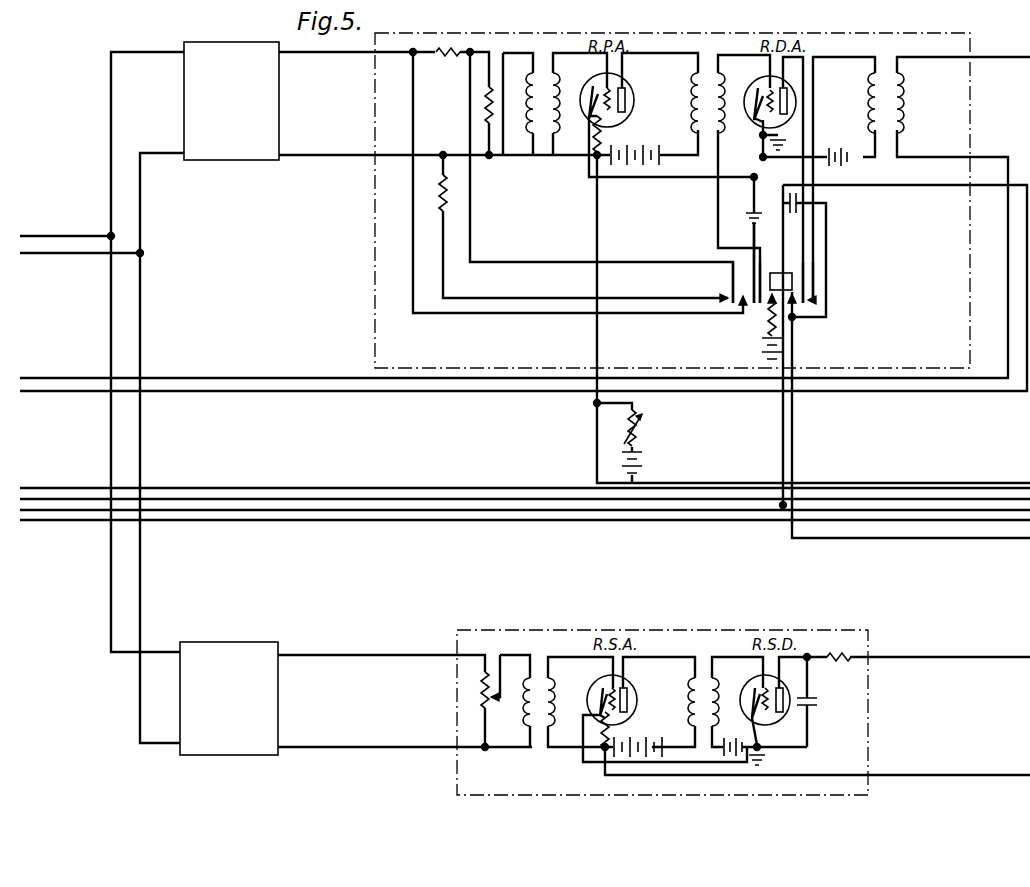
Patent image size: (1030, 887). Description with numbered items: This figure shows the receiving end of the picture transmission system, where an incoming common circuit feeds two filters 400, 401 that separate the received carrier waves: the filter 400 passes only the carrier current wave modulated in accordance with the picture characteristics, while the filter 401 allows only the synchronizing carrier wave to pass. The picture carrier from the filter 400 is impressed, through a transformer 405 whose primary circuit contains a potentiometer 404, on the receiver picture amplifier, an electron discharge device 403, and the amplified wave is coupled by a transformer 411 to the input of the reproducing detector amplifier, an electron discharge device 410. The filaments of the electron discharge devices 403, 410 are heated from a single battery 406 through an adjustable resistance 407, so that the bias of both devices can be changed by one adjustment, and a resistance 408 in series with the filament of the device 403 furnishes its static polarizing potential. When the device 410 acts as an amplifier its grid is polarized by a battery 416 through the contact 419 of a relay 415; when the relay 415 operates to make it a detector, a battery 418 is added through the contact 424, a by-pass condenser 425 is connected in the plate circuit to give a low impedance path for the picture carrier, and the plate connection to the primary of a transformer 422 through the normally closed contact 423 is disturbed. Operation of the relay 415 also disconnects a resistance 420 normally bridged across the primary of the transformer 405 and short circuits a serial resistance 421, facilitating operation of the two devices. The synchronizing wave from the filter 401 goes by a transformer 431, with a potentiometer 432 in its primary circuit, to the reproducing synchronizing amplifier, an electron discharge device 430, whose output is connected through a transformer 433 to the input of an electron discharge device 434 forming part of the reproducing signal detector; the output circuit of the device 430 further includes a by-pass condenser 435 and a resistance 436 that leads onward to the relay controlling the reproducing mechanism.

The filter 400 is at (275, 152).
The filter 401 is at (258, 752).
The electron discharge device 403 is at (598, 80).
The potentiometer 404 is at (489, 131).
The transformer 405 is at (546, 68).
The battery 406 is at (644, 454).
The adjustable resistance 407 is at (641, 425).
The resistance 408 is at (606, 140).
The electron discharge device 410 is at (762, 80).
The transformer 411 is at (713, 132).
The relay 415 is at (770, 280).
The battery 416 is at (752, 214).
The battery 418 is at (759, 335).
The contact 419 is at (753, 305).
The resistance 420 is at (450, 190).
The serial resistance 421 is at (443, 58).
The transformer 422 is at (888, 135).
The contact 423 is at (807, 302).
The contact 424 is at (774, 302).
The by-pass condenser 425 is at (797, 171).
The electron discharge device 430 is at (600, 684).
The transformer 431 is at (545, 730).
The potentiometer 432 is at (493, 714).
The transformer 433 is at (697, 726).
The electron discharge device 434 is at (757, 684).
The by-pass condenser 435 is at (817, 705).
The resistance 436 is at (830, 661).